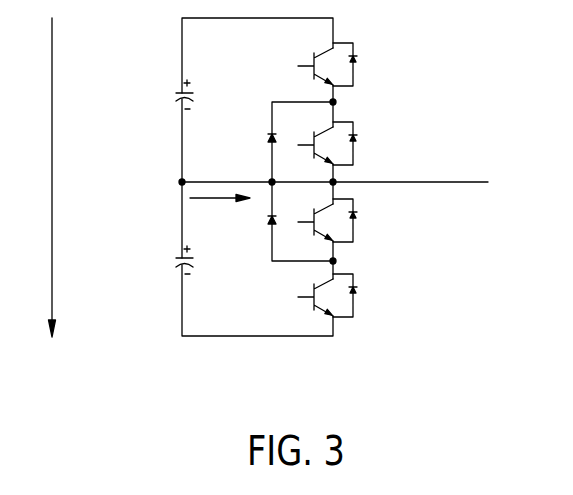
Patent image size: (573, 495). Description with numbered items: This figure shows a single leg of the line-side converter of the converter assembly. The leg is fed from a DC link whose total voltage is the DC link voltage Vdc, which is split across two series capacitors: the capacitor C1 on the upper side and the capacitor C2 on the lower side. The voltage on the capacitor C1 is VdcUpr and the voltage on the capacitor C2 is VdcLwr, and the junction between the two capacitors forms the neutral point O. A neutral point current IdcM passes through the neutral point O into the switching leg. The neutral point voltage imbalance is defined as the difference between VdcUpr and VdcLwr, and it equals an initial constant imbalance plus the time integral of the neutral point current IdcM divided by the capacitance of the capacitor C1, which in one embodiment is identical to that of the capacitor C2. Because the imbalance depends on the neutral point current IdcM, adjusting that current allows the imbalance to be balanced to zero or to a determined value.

The capacitor C1 is at (195, 94).
The capacitor C2 is at (196, 260).
The neutral point O is at (257, 167).
The neutral point current IdcM is at (220, 213).
The DC link voltage Vdc is at (71, 177).
The voltage on the capacitor C1 VdcUpr is at (131, 93).
The voltage on the capacitor C2 VdcLwr is at (131, 261).